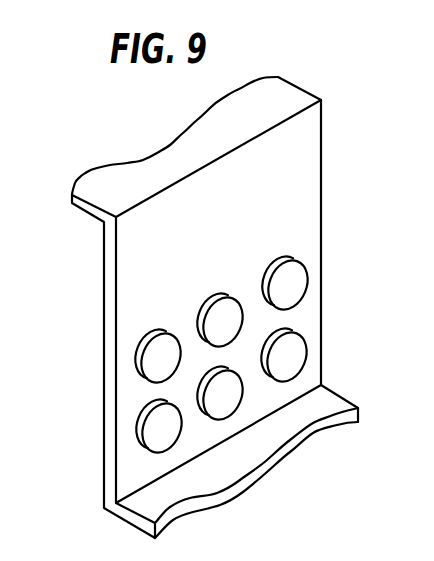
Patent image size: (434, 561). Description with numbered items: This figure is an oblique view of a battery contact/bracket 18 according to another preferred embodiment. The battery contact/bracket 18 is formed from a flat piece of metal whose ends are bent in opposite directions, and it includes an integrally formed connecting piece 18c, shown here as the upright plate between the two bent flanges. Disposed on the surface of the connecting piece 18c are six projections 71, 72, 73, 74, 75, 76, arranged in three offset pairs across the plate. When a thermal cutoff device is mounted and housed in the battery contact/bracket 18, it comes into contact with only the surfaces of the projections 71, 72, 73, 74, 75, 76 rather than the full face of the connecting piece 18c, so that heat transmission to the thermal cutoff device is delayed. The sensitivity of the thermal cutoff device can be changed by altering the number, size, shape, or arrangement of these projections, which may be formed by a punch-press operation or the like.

The battery contact/bracket 18 is at (330, 149).
The connecting piece 18c is at (290, 227).
The projection 71 is at (152, 357).
The projection 72 is at (215, 322).
The projection 73 is at (285, 290).
The projection 74 is at (152, 427).
The projection 75 is at (226, 395).
The projection 76 is at (287, 358).